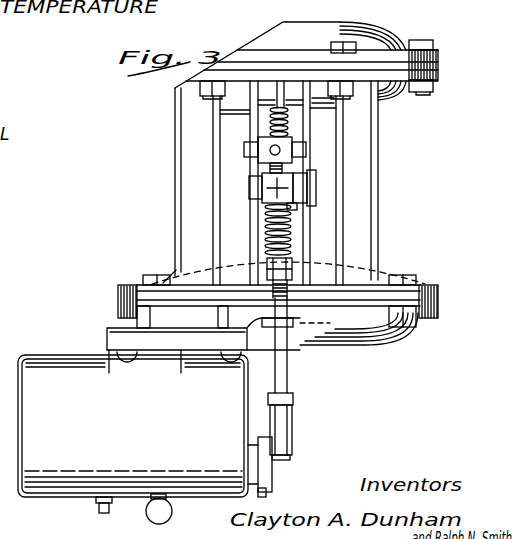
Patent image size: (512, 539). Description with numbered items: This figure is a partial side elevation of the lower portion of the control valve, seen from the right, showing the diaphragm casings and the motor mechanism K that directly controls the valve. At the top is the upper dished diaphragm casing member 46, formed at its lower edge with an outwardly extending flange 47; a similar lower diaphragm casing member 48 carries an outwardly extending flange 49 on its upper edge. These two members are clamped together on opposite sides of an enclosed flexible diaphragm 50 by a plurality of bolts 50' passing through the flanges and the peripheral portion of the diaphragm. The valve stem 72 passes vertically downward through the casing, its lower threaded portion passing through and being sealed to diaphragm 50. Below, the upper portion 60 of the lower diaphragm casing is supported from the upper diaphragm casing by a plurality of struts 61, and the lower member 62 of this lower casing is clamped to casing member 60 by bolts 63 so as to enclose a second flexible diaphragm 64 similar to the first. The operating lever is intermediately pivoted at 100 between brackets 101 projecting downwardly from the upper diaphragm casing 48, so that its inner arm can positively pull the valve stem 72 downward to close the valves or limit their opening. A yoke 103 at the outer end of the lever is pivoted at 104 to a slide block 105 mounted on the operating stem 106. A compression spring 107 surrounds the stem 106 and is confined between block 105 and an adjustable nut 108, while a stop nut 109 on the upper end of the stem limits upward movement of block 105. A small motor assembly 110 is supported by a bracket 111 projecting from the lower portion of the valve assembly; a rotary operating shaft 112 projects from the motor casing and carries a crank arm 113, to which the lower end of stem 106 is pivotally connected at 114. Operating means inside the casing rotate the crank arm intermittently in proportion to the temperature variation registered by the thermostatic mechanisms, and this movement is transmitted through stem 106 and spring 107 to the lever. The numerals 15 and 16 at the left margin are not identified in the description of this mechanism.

The upper dished diaphragm casing member 46 is at (357, 42).
The outwardly extending flange 47 is at (437, 48).
The lower diaphragm casing member 48 is at (392, 94).
The outwardly extending flange 49 is at (438, 92).
The flexible diaphragm 50 is at (434, 65).
The bolts 50' is at (409, 30).
The upper portion of lower diaphragm casing 60 is at (316, 252).
The struts 61 is at (182, 212).
The lower member of lower diaphragm casing 62 is at (347, 340).
The bolts 63 is at (157, 277).
The second flexible diaphragm 64 is at (118, 303).
The valve stem 72 is at (288, 122).
The pivot 100 is at (277, 158).
The brackets 101 is at (298, 95).
The yoke 103 is at (300, 173).
The pivot 104 is at (300, 193).
The slide block 105 is at (290, 210).
The operating stem 106 is at (272, 168).
The compression spring 107 is at (267, 237).
The adjustable nut 108 is at (269, 262).
The stop nut 109 is at (270, 148).
The motor assembly 110 is at (76, 495).
The bracket 111 is at (110, 344).
The rotary operating shaft 112 is at (272, 472).
The crank arm 113 is at (268, 490).
The pivot connection 114 is at (293, 437).
The motor mechanism K is at (297, 391).
The element 15 is at (10, 174).
The element 16 is at (11, 204).